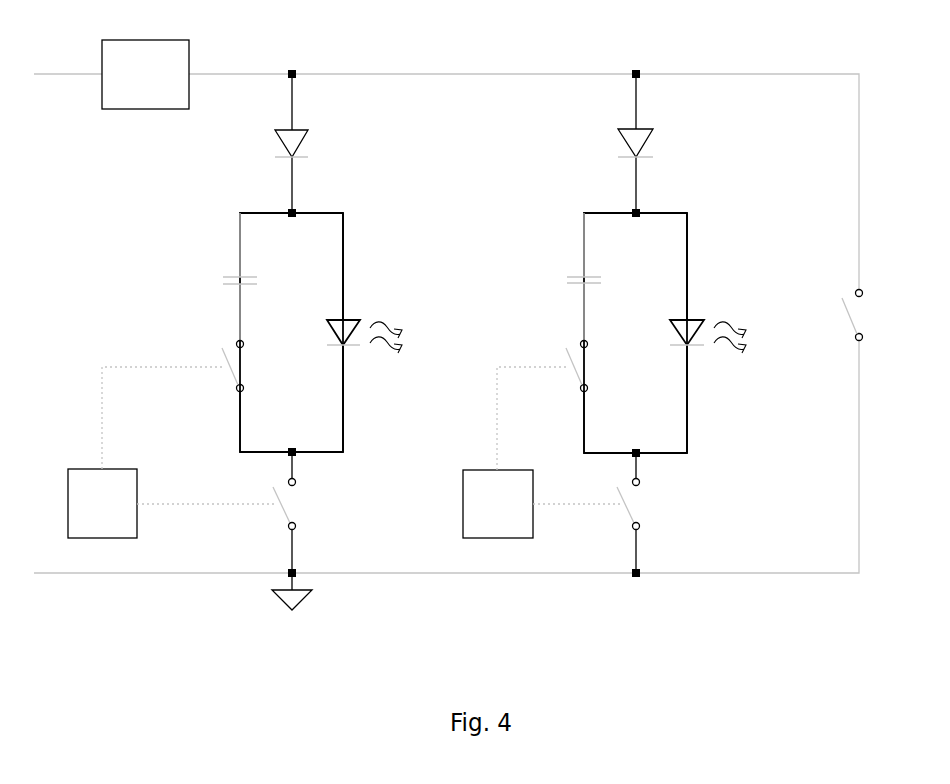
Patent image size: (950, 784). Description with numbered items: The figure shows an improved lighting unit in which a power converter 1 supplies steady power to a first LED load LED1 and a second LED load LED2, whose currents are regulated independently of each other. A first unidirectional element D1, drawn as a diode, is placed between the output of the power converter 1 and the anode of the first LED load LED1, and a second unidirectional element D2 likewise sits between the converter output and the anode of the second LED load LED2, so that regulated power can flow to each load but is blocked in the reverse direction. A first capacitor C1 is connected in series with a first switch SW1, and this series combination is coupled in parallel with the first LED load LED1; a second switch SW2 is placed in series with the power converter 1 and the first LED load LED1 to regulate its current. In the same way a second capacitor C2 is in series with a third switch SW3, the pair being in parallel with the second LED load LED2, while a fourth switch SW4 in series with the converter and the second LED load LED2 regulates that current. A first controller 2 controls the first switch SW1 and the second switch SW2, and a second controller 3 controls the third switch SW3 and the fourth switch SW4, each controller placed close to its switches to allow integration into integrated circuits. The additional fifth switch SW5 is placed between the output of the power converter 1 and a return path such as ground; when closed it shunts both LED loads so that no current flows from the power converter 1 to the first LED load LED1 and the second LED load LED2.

The power converter 1 is at (145, 74).
The first controller 2 is at (171, 452).
The second controller 3 is at (541, 452).
The first unidirectional element D1 is at (302, 143).
The second unidirectional element D2 is at (645, 143).
The first capacitor C1 is at (251, 276).
The second capacitor C2 is at (595, 276).
The first LED load LED1 is at (370, 332).
The second LED load LED2 is at (713, 333).
The first switch SW1 is at (261, 397).
The second switch SW2 is at (315, 512).
The third switch SW3 is at (608, 397).
The fourth switch SW4 is at (661, 513).
The fifth switch SW5 is at (883, 315).